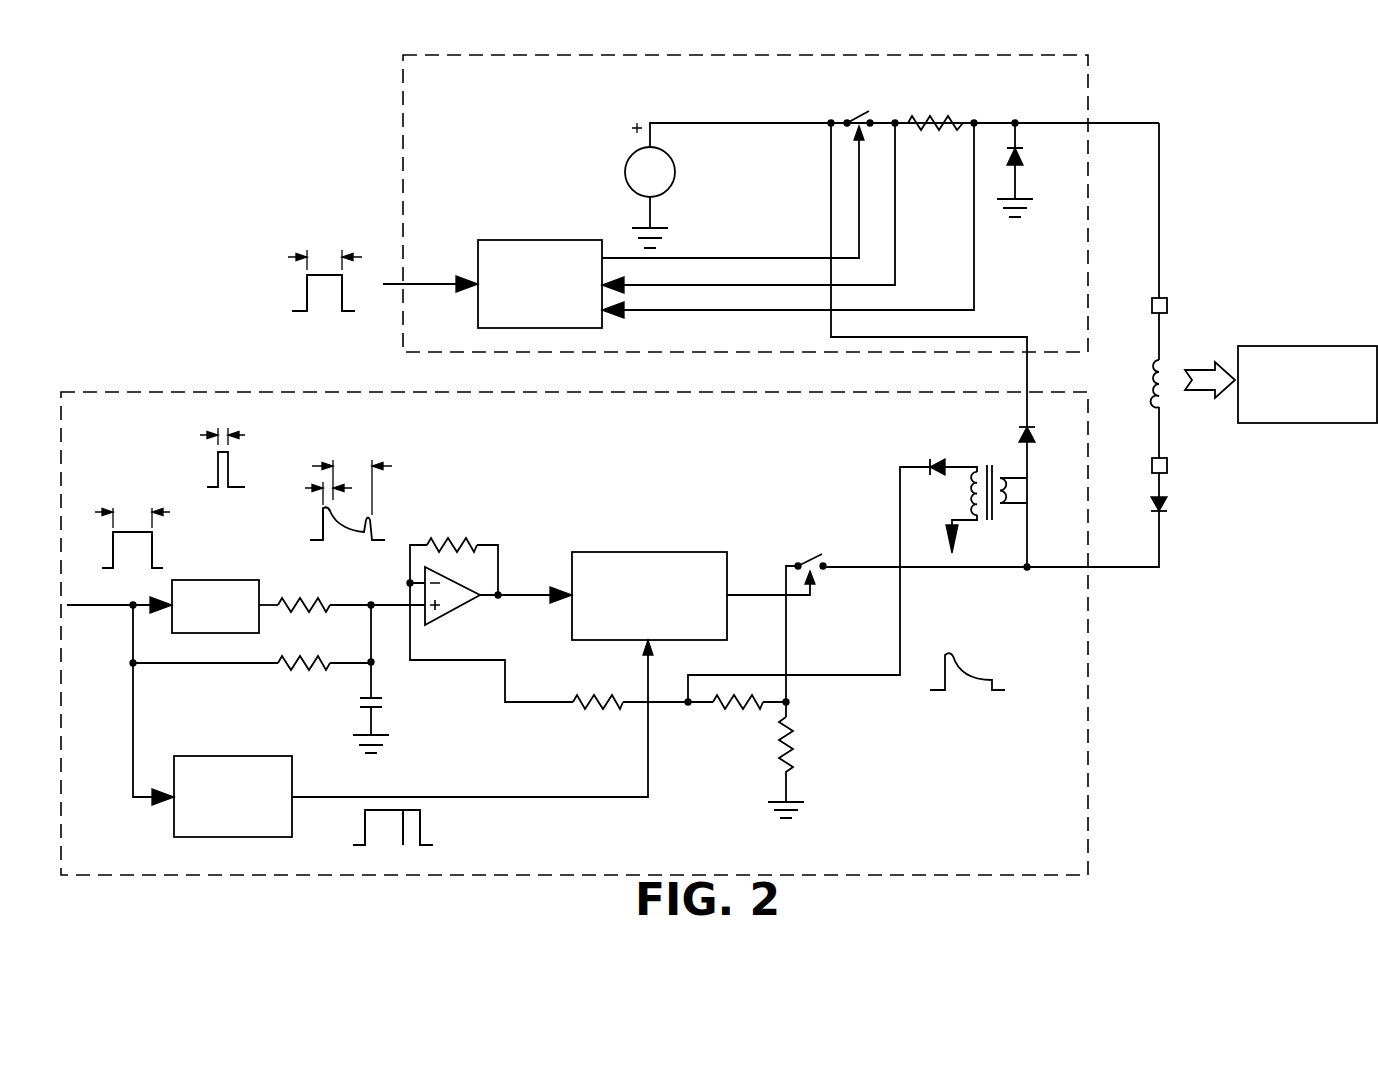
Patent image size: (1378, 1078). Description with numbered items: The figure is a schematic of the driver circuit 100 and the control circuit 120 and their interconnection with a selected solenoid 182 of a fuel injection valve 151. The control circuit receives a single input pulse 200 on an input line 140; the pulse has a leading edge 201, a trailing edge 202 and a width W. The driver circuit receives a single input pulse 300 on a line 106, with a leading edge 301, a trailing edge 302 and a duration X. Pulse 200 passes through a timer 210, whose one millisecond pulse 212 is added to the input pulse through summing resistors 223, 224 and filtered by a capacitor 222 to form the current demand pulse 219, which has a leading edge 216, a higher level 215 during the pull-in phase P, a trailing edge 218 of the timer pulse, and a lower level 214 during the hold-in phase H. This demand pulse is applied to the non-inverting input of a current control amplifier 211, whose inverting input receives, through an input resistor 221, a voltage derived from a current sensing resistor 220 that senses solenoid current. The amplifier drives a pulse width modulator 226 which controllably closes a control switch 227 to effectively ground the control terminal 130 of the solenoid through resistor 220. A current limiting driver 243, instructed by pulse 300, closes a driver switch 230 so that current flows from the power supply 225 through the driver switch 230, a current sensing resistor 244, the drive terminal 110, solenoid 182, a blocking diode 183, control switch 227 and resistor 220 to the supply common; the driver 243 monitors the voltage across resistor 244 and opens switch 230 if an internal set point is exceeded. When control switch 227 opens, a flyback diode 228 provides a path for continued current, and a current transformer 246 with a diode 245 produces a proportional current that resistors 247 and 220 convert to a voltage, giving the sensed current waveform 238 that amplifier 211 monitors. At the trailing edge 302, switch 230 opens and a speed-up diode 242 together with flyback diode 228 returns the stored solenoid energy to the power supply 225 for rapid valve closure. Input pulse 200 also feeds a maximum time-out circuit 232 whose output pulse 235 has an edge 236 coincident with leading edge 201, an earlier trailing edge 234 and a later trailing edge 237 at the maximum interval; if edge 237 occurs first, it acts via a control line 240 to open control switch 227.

The high voltage turn-off and multiplexing switch section 100 is at (400, 168).
The driver input signal line 106 is at (430, 277).
The drive terminal 110 is at (1167, 300).
The low voltage control circuit section 120 is at (201, 392).
The control terminal 130 is at (1167, 470).
The input signal line 140 is at (125, 610).
The fuel injection valve 151 is at (1288, 345).
The solenoid 182 is at (1165, 358).
The blocking diode 183 is at (1170, 505).
The input pulse 200 is at (132, 546).
The leading edge 201 is at (113, 555).
The trailing edge 202 is at (152, 556).
The timer 210 is at (225, 619).
The current control amplifier 211 is at (471, 586).
The one millisecond pulse 212 is at (270, 592).
The lower level 214 is at (375, 523).
The higher level 215 is at (322, 506).
The leading edge 216 is at (318, 541).
The trailing edge 218 is at (334, 513).
The current demand pulse 219 is at (371, 592).
The current sensing resistor 220 is at (782, 740).
The input resistor 221 is at (549, 657).
The capacitor 222 is at (387, 723).
The summing resistor 223 is at (324, 616).
The summing resistor 224 is at (252, 674).
The power supply 225 is at (892, 185).
The pulse width modulator 226 is at (649, 584).
The control switch 227 is at (805, 615).
The flyback diode 228 is at (1018, 437).
The driver switch 230 is at (868, 128).
The maximum time-out timer 232 is at (233, 784).
The trailing edge of time out pulse 234 is at (405, 821).
The output pulse shape 235 is at (393, 841).
The edge 236 is at (365, 829).
The trailing edge 237 is at (421, 834).
The current sense waveform 238 is at (800, 686).
The control line 240 is at (472, 718).
The speed-up diode 242 is at (1022, 160).
The current limiting driver 243 is at (540, 272).
The current sensing resistor 244 is at (935, 133).
The diode 245 is at (932, 479).
The current transformer 246 is at (857, 583).
The resistor 247 is at (737, 712).
The input pulse 300 is at (325, 291).
The leading edge 301 is at (307, 298).
The trailing edge 302 is at (343, 292).